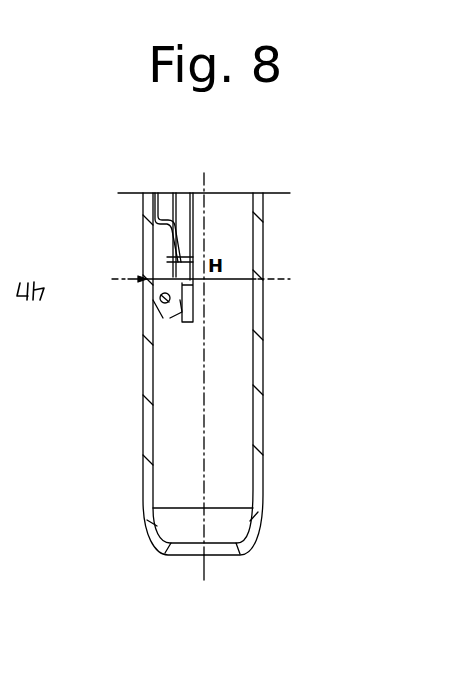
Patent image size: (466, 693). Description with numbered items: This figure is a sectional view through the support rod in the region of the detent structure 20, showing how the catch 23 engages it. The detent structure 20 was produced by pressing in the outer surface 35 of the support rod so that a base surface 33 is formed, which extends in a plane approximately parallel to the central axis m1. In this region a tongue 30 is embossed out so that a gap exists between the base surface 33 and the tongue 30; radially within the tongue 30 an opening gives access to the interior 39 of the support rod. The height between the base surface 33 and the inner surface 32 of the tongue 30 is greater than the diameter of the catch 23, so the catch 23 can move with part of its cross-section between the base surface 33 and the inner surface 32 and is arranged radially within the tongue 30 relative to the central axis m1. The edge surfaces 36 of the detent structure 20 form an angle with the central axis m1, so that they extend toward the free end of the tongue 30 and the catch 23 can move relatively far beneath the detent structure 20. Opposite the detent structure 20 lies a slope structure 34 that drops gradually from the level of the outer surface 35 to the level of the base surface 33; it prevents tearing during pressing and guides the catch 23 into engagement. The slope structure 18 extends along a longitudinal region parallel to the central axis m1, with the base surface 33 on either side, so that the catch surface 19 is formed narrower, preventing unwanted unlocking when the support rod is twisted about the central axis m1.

The slope structure 18 is at (137, 254).
The catch surface 19 is at (134, 225).
The detent structure 20 is at (103, 265).
The catch 23 is at (133, 297).
The tongue 30 is at (140, 285).
The inner surface 32 is at (171, 313).
The base surface 33 is at (222, 280).
The slope structure 34 is at (148, 258).
The outer surface 35 is at (276, 409).
The edge surfaces 36 is at (188, 303).
The interior 39 is at (158, 405).
The central axis m1 is at (198, 568).